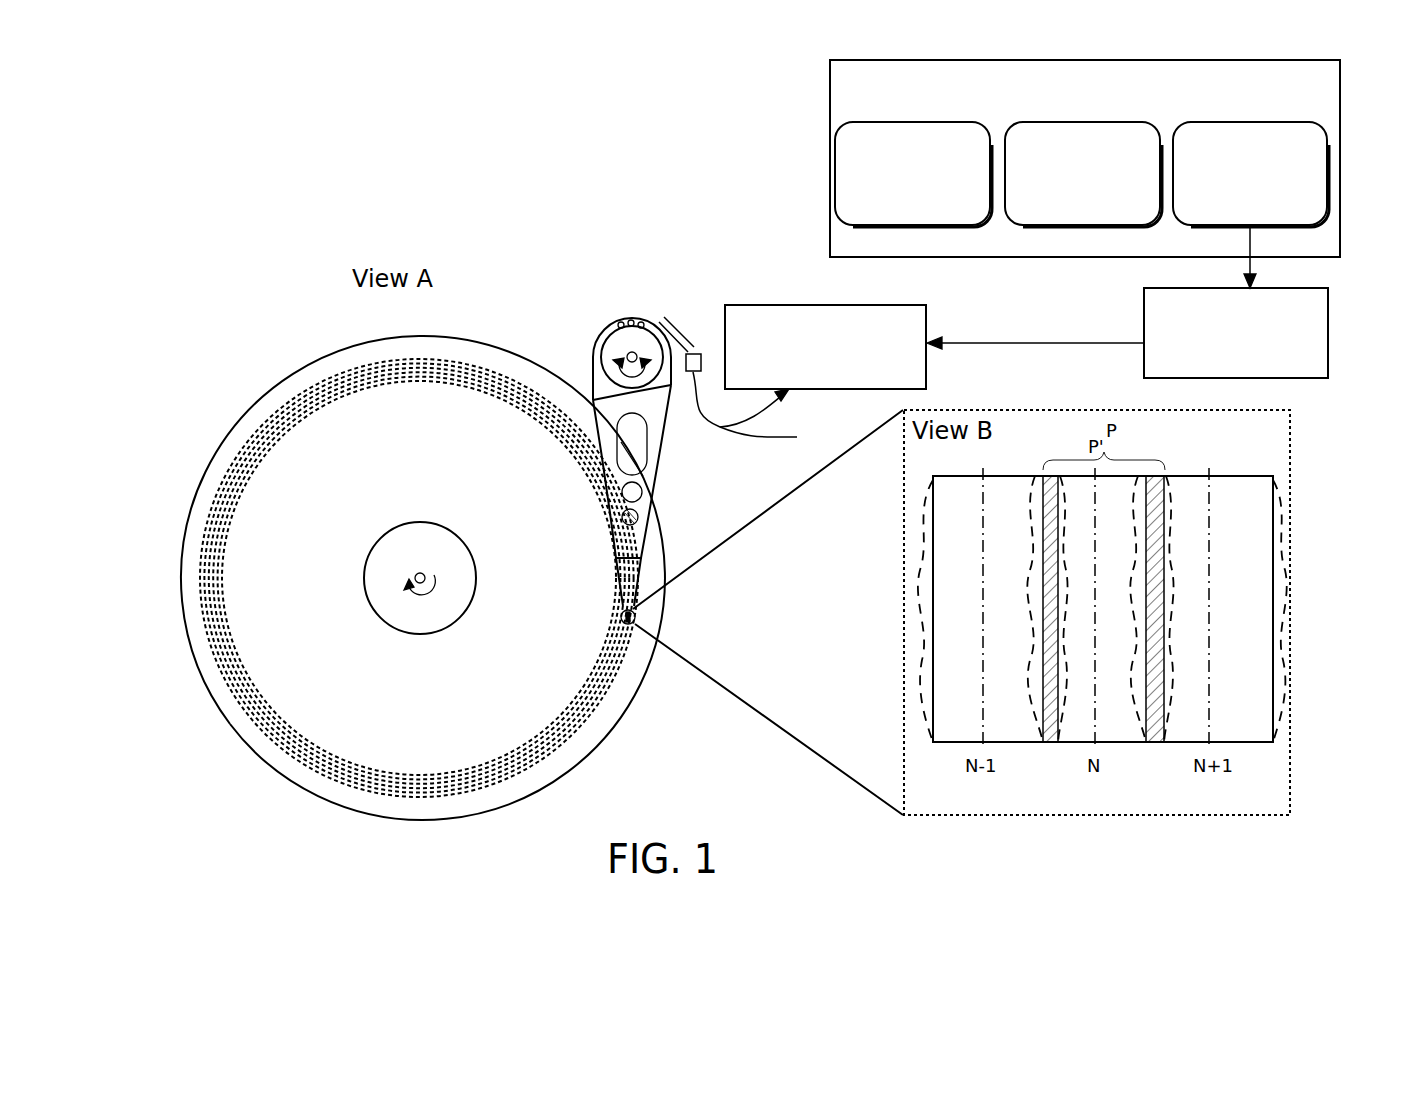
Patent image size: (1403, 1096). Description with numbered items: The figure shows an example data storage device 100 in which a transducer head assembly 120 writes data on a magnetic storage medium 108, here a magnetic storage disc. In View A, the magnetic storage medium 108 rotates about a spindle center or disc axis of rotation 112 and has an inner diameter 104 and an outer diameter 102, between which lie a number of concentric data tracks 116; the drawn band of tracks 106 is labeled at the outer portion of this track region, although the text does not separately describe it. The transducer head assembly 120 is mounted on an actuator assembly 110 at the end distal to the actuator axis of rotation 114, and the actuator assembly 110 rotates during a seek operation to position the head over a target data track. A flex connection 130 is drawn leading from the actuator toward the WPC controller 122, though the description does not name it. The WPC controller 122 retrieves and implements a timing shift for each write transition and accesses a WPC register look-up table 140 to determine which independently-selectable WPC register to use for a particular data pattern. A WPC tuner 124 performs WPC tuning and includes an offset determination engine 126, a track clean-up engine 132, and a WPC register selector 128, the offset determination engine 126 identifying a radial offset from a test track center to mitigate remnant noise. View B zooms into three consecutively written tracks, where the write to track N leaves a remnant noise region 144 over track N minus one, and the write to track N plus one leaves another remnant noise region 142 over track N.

The data storage device 100 is at (556, 169).
The outer diameter 102 is at (475, 340).
The inner diameter 104 is at (413, 521).
The data tracks 106 is at (331, 371).
The magnetic storage medium 108 is at (290, 785).
The actuator assembly 110 is at (650, 492).
The disc axis of rotation 112 is at (427, 586).
The actuator axis of rotation 114 is at (632, 357).
The concentric data tracks 116 is at (257, 430).
The transducer head assembly 120 is at (641, 618).
The WPC controller 122 is at (825, 347).
The WPC tuner 124 is at (1085, 158).
The offset determination engine 126 is at (913, 174).
The WPC register selector 128 is at (1251, 174).
The flex cable 130 is at (749, 386).
The track clean-up engine 132 is at (1083, 174).
The WPC register look-up table 140 is at (1127, 302).
The remnant noise region 142 is at (1153, 742).
The remnant noise region 144 is at (1047, 742).